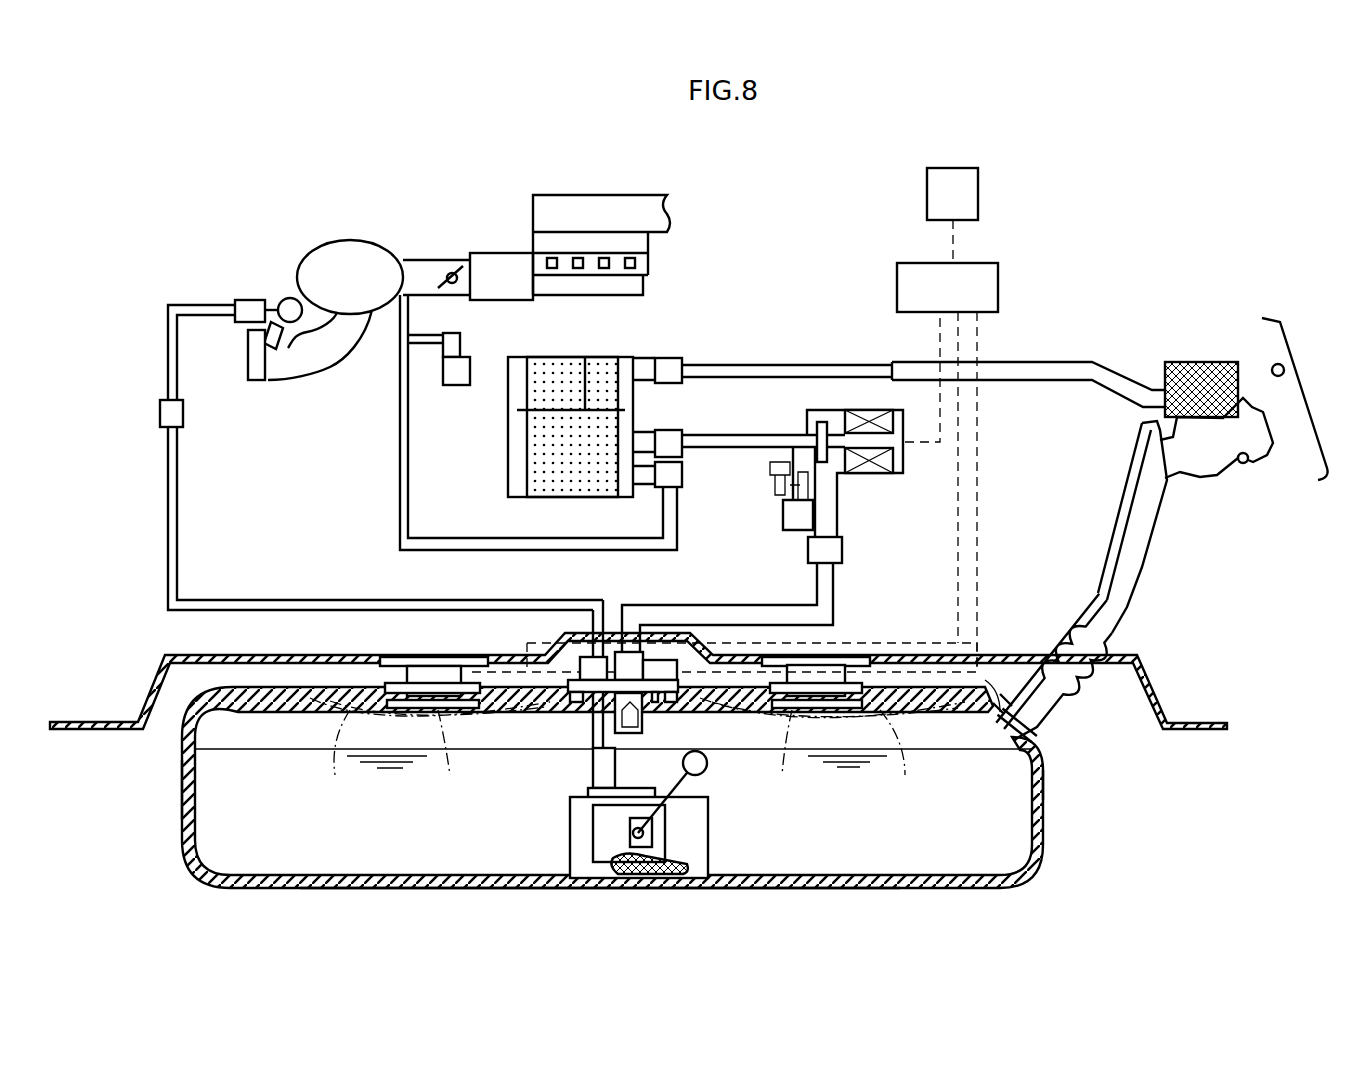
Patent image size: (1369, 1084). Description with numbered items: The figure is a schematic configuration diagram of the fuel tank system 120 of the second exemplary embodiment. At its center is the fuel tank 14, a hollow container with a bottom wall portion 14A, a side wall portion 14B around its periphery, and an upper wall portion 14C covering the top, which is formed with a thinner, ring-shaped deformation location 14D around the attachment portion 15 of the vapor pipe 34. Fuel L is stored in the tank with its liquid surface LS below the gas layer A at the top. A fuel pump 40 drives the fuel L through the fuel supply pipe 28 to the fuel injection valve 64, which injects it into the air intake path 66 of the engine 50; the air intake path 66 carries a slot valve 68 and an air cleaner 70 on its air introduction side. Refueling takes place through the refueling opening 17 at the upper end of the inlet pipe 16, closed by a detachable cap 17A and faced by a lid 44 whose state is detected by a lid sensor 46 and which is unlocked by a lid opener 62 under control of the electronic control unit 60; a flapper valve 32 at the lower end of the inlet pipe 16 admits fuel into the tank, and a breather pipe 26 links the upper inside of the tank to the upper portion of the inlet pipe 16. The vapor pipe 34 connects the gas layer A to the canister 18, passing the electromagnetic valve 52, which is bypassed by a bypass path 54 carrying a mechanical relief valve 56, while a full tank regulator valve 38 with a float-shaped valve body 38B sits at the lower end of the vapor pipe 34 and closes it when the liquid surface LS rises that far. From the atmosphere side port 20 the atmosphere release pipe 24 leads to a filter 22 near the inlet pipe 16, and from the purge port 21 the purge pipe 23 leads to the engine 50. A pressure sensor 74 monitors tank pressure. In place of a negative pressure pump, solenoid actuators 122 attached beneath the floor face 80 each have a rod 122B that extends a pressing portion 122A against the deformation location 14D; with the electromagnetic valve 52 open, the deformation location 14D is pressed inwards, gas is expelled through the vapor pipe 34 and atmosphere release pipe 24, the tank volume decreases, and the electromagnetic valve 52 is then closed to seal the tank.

The fuel tank 14 is at (1050, 812).
The bottom wall portion 14A is at (425, 892).
The side wall portion 14B is at (182, 788).
The upper wall portion 14C is at (262, 688).
The deformation location 14D is at (631, 758).
The attachment portion 15 is at (572, 677).
The inlet pipe 16 is at (1154, 574).
The refueling opening 17 is at (1237, 473).
The cap 17A is at (1220, 480).
The canister 18 is at (502, 446).
The atmosphere side port 20 is at (637, 357).
The purge port 21 is at (637, 495).
The filter 22 is at (1200, 362).
The purge pipe 23 is at (455, 553).
The atmosphere release pipe 24 is at (1013, 361).
The breather pipe 26 is at (1115, 523).
The fuel supply pipe 28 is at (180, 487).
The flapper valve 32 is at (998, 738).
The vapor pipe 34 is at (775, 605).
The full tank regulator valve 38 is at (648, 718).
The valve body 38B is at (632, 733).
The fuel pump 40 is at (565, 838).
The lid 44 is at (1312, 386).
The lid sensor 46 is at (1282, 362).
The engine 50 is at (398, 240).
The electromagnetic valve 52 is at (906, 462).
The bypass path 54 is at (785, 513).
The relief valve 56 is at (772, 494).
The electronic control unit 60 is at (985, 262).
The lid opener 62 is at (979, 193).
The fuel injection valve 64 is at (262, 327).
The air intake path 66 is at (432, 258).
The slot valve 68 is at (456, 264).
The air cleaner 70 is at (652, 263).
The pressure sensor 74 is at (657, 657).
The floor face 80 is at (990, 652).
The fuel tank system 120 is at (1088, 312).
The actuators 122 is at (627, 696).
The pressing portion 122A is at (628, 758).
The rod 122B is at (447, 660).
The gas layer A is at (985, 680).
The fuel L is at (1047, 779).
The liquid surface LS is at (286, 750).